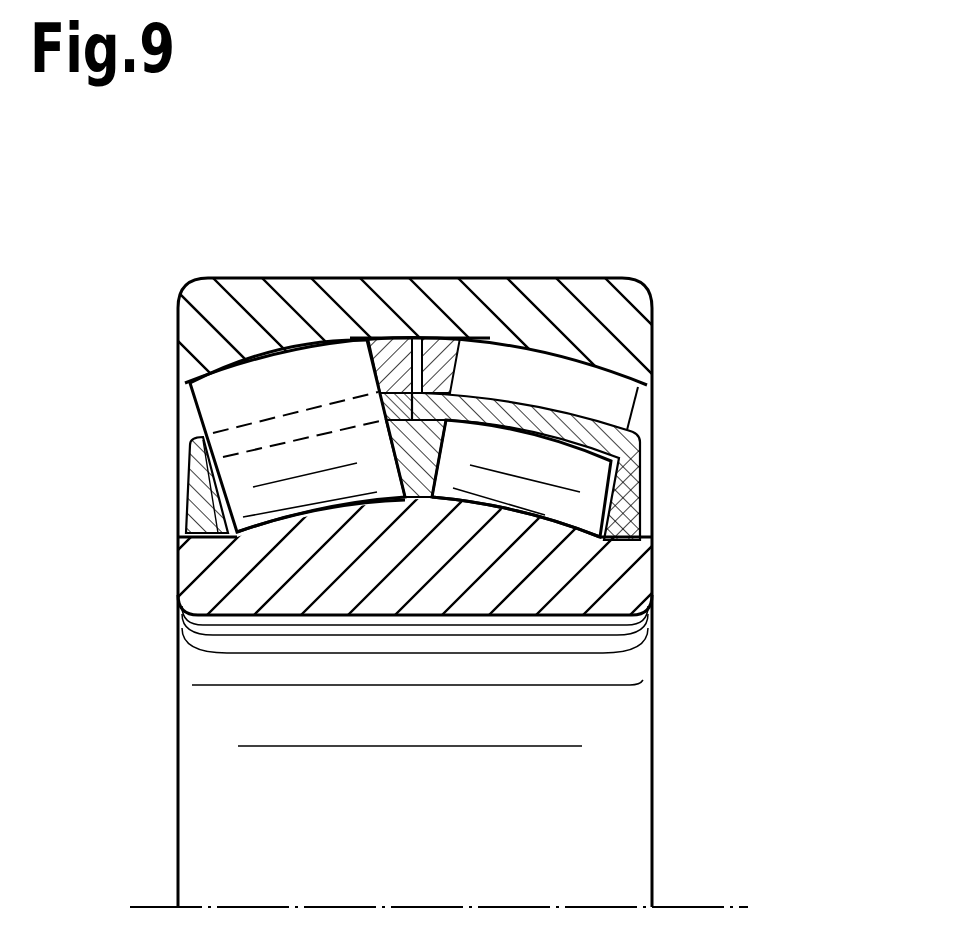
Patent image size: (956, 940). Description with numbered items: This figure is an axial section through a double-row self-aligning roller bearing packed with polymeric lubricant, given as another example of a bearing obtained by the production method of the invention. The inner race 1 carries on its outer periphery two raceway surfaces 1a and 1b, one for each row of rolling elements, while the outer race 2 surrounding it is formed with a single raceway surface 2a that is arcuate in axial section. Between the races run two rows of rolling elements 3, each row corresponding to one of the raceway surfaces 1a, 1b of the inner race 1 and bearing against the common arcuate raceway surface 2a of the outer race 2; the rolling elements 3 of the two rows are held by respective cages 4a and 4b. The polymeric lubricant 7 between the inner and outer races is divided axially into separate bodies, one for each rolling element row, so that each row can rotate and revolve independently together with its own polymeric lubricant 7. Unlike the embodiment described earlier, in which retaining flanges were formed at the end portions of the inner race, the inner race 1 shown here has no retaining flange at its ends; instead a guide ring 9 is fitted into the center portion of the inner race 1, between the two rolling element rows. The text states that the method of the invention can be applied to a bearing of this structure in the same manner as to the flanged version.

The inner race 1 is at (383, 598).
The raceway surface 1a is at (522, 520).
The raceway surface 1b is at (300, 522).
The outer race 2 is at (450, 280).
The raceway surface 2a is at (307, 357).
The rolling element 3 is at (217, 400).
The cage 4a is at (603, 418).
The cage 4b is at (200, 487).
The polymeric lubricant 7 is at (387, 350).
The guide ring 9 is at (443, 462).